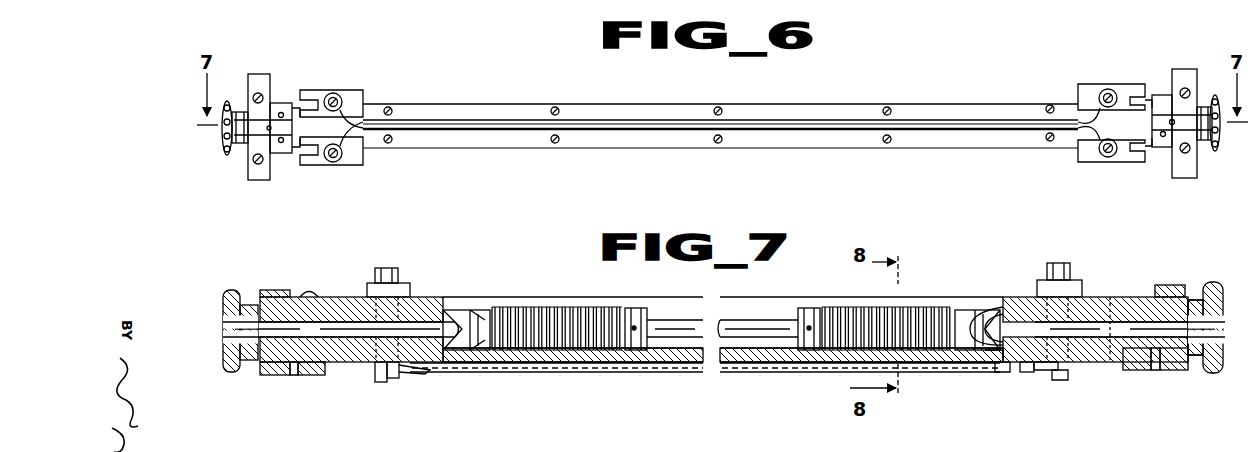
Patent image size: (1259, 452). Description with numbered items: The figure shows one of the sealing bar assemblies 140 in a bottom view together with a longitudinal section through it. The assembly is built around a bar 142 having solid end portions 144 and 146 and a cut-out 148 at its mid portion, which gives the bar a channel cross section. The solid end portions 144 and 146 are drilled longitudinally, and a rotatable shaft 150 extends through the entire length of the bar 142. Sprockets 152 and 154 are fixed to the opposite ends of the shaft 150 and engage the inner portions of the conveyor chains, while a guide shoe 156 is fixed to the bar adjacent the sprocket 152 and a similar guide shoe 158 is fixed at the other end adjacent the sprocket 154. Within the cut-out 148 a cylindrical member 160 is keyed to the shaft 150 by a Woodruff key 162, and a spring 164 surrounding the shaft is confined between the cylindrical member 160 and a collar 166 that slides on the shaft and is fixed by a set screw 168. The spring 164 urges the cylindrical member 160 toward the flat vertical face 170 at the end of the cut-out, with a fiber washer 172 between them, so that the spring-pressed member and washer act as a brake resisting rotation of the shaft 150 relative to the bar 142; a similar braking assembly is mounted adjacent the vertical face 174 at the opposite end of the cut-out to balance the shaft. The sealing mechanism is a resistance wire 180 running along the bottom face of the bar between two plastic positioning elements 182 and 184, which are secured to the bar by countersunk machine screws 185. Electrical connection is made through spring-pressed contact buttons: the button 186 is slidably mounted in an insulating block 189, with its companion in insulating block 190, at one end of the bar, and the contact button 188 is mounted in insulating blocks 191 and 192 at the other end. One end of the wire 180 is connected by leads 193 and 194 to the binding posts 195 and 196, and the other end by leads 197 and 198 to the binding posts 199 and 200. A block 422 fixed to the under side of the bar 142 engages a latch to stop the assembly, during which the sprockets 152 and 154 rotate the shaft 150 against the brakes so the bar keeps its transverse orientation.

In FIG. 6, the sealing bar assembly 140 is at (720, 120).
In FIG. 7, the sealing bar assembly 140 is at (705, 391).
In FIG. 7, the bar 142 is at (345, 355).
In FIG. 7, the solid end portion 144 is at (342, 300).
In FIG. 7, the solid end portion 146 is at (1100, 297).
In FIG. 7, the cut-out 148 is at (752, 302).
In FIG. 7, the shaft 150 is at (675, 330).
In FIG. 6, the sprocket 152 is at (228, 142).
In FIG. 7, the sprocket 152 is at (232, 290).
In FIG. 6, the sprocket 154 is at (1215, 150).
In FIG. 7, the sprocket 154 is at (1212, 373).
In FIG. 7, the guide shoe 156 is at (285, 291).
In FIG. 7, the guide shoe 158 is at (1177, 272).
In FIG. 7, the cylindrical member 160 is at (988, 352).
In FIG. 7, the Woodruff key 162 is at (980, 310).
In FIG. 7, the spring 164 is at (845, 330).
In FIG. 7, the collar 166 is at (818, 350).
In FIG. 7, the set screw 168 is at (808, 330).
In FIG. 7, the flat vertical face 170 is at (1000, 308).
In FIG. 7, the fiber washer 172 is at (1002, 372).
In FIG. 7, the vertical face 174 is at (470, 308).
In FIG. 7, the resistance wire 180 is at (703, 373).
In FIG. 6, the plastic positioning element 182 is at (770, 110).
In FIG. 6, the plastic positioning element 184 is at (833, 148).
In FIG. 6, the countersunk machine screws 185 is at (392, 138).
In FIG. 7, the contact button 186 is at (1068, 267).
In FIG. 7, the contact button 188 is at (398, 272).
In FIG. 6, the insulating block 189 is at (1122, 158).
In FIG. 7, the insulating block 189 is at (1070, 286).
In FIG. 6, the insulating block 190 is at (1125, 87).
In FIG. 6, the insulating block 191 is at (352, 166).
In FIG. 7, the insulating block 191 is at (402, 288).
In FIG. 6, the insulating block 192 is at (352, 93).
In FIG. 6, the lead 193 is at (1093, 134).
In FIG. 7, the lead 193 is at (1042, 370).
In FIG. 6, the lead 194 is at (1088, 118).
In FIG. 7, the lead 194 is at (1028, 372).
In FIG. 6, the binding post 195 is at (1105, 157).
In FIG. 7, the binding post 195 is at (1066, 380).
In FIG. 6, the binding post 196 is at (1100, 92).
In FIG. 6, the lead 197 is at (348, 138).
In FIG. 7, the lead 197 is at (395, 378).
In FIG. 6, the lead 198 is at (341, 115).
In FIG. 7, the lead 198 is at (415, 374).
In FIG. 6, the binding post 199 is at (333, 162).
In FIG. 7, the binding post 199 is at (382, 382).
In FIG. 6, the binding post 200 is at (332, 93).
In FIG. 6, the block 422 is at (258, 128).
In FIG. 7, the block 422 is at (272, 366).